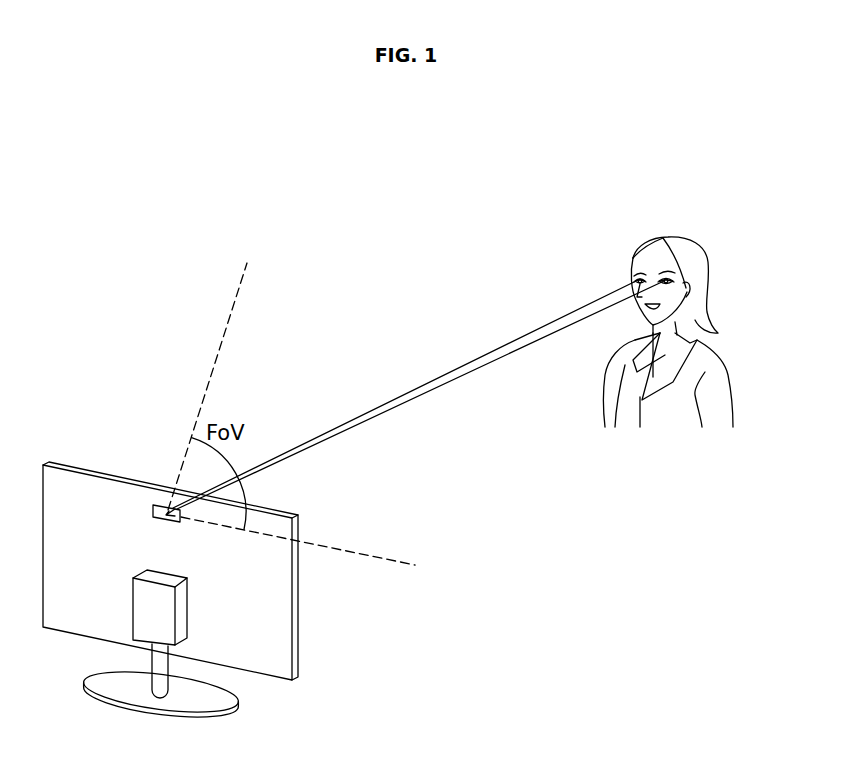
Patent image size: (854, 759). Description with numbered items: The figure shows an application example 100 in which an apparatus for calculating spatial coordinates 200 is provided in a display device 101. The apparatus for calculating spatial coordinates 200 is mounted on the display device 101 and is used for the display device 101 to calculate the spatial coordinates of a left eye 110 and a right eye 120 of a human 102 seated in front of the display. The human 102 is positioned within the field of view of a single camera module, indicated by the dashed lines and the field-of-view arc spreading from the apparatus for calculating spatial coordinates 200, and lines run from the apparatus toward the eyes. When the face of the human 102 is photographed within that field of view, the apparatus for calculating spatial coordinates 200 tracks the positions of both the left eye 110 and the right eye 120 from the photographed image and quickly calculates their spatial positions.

The application example 100 is at (406, 129).
The display device 101 is at (282, 605).
The human 102 is at (690, 240).
The left eye 110 is at (693, 281).
The right eye 120 is at (632, 280).
The apparatus for calculating spatial coordinates 200 is at (162, 506).